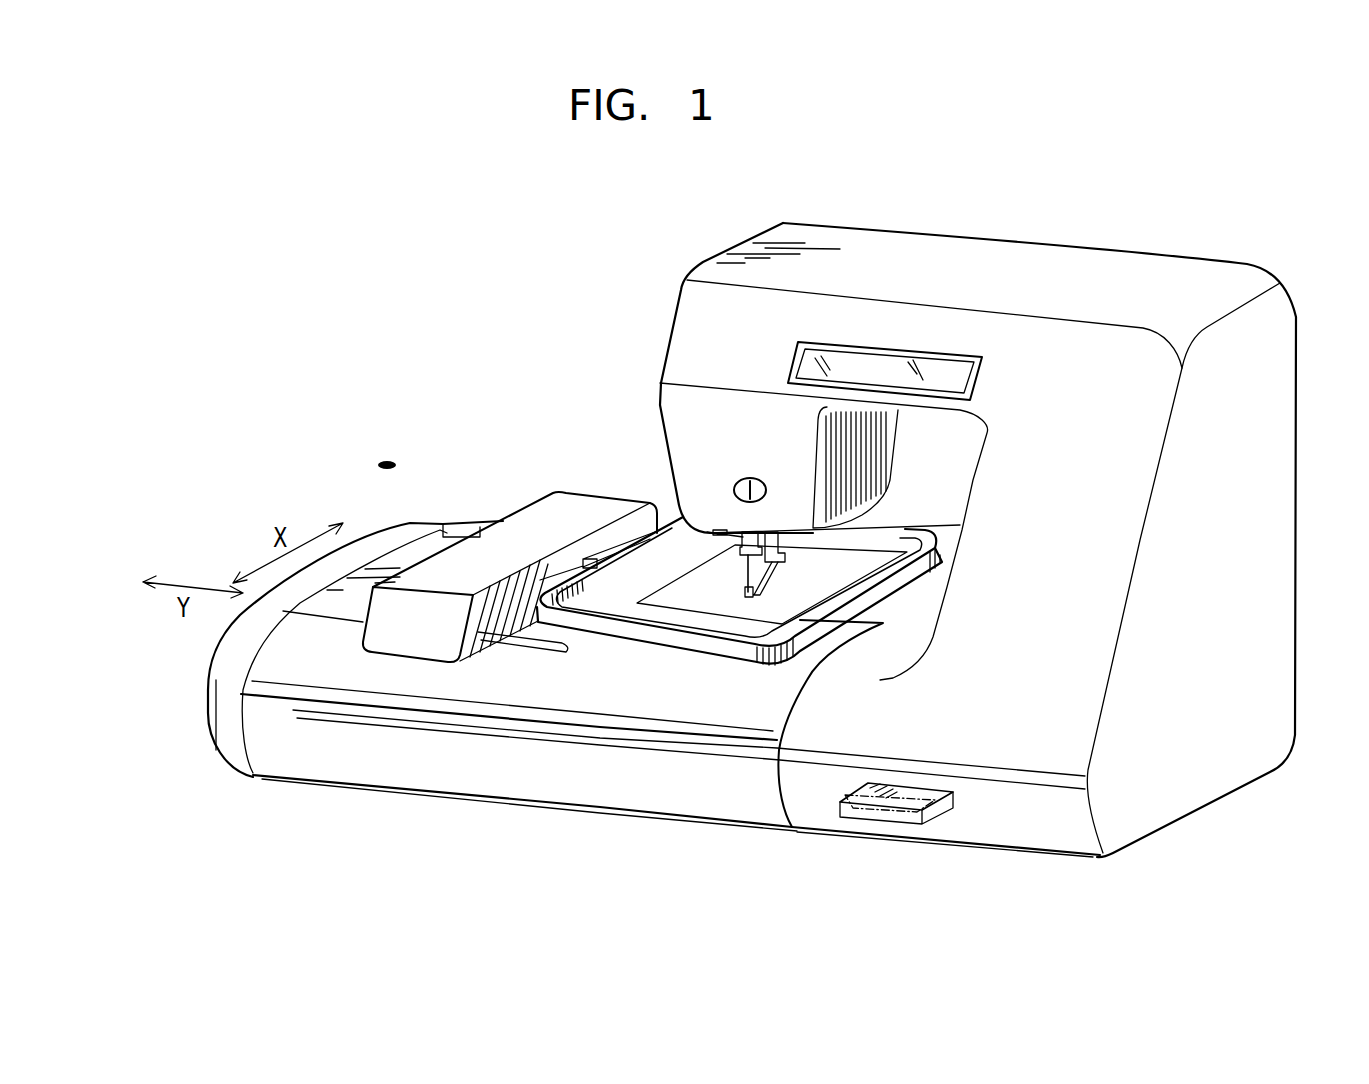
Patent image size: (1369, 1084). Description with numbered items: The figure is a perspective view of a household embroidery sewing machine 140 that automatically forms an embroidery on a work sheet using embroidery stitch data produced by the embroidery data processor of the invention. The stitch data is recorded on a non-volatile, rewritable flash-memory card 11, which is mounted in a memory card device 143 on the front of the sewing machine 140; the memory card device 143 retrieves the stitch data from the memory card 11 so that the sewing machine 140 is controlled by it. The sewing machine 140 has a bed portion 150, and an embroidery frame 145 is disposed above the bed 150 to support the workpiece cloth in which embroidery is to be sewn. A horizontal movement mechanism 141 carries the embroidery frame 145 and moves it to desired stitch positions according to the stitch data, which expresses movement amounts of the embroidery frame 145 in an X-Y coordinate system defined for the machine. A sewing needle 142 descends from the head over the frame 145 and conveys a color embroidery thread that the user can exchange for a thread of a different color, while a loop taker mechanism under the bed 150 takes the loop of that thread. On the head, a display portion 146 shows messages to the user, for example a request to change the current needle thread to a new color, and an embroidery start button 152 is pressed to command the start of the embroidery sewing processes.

The embroidery sewing machine 140 is at (520, 360).
The horizontal movement mechanism 141 is at (537, 498).
The sewing needle 142 is at (730, 572).
The memory card device 143 is at (947, 808).
The embroidery frame 145 is at (661, 642).
The display portion 146 is at (955, 372).
The bed portion 150 is at (387, 542).
The embroidery start button 152 is at (733, 483).
The memory card 11 is at (875, 825).